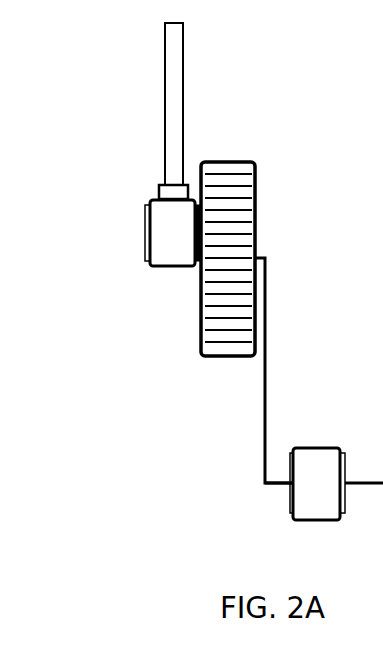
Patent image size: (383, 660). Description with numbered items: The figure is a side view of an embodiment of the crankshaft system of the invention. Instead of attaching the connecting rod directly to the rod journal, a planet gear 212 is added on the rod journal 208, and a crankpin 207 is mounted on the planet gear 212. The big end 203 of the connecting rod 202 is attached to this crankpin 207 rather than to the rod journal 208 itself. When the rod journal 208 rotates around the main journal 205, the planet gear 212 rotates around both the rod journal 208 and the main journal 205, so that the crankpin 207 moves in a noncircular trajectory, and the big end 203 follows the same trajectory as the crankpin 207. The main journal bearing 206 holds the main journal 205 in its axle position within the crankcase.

The connecting rod 202 is at (113, 103).
The big end 203 is at (114, 219).
The crankpin 207 is at (103, 245).
The planet gear 212 is at (159, 272).
The rod journal 208 is at (312, 338).
The main journal 205 is at (215, 456).
The main journal bearing 206 is at (249, 499).